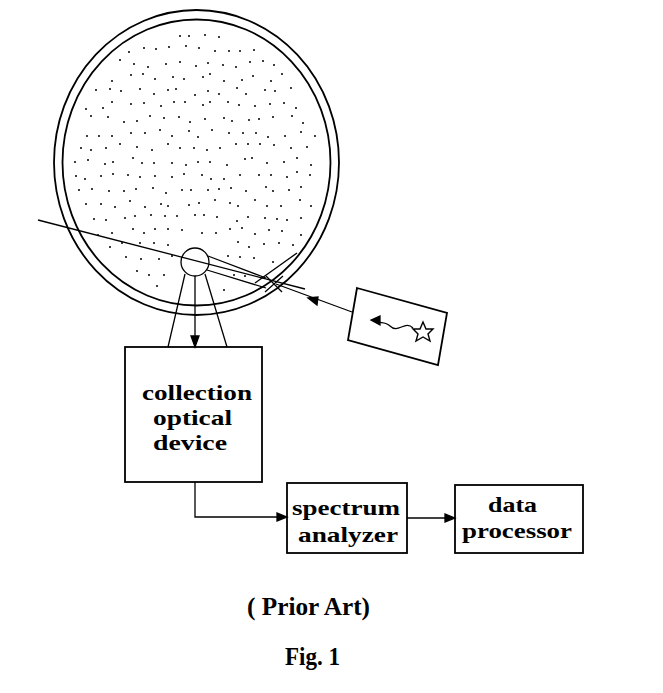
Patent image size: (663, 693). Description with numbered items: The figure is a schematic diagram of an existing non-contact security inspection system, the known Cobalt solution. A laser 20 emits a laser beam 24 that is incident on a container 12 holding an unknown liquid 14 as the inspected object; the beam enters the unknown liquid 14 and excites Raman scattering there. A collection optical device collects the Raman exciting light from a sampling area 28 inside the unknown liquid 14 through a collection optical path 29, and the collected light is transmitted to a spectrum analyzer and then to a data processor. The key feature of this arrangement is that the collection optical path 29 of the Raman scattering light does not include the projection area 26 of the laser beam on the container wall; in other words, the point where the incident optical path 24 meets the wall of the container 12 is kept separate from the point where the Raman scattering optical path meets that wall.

The container 12 is at (283, 42).
The unknown liquid 14 is at (302, 104).
The laser 20 is at (449, 312).
The laser beam 24 is at (237, 270).
The projection area of the laser beam 26 is at (274, 292).
The sampling area 28 is at (203, 249).
The collection optical path 29 is at (170, 327).